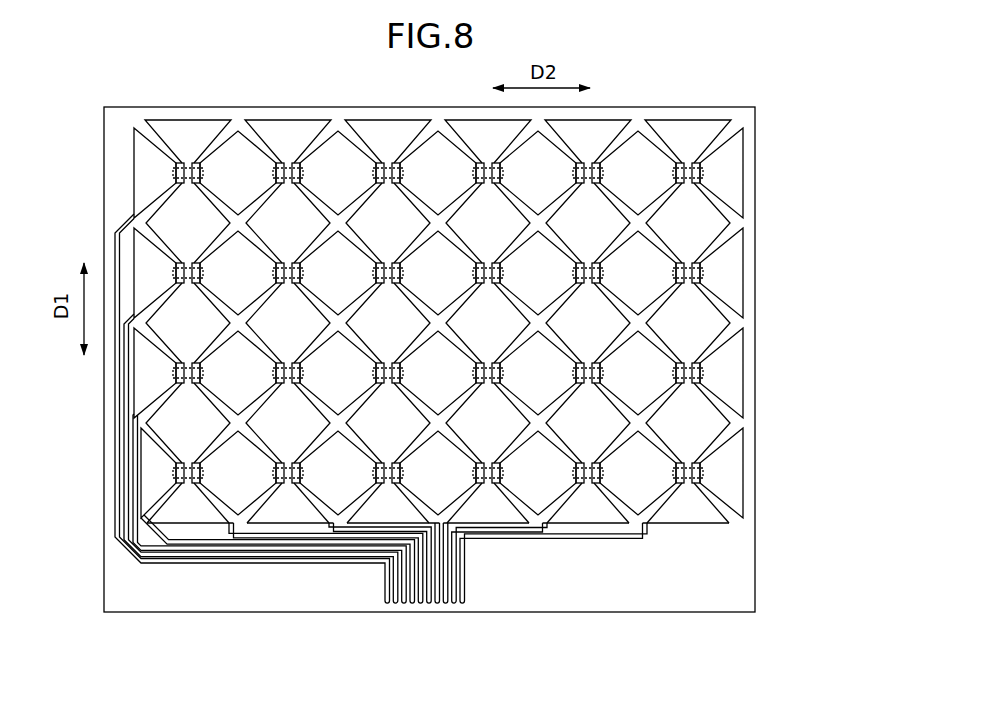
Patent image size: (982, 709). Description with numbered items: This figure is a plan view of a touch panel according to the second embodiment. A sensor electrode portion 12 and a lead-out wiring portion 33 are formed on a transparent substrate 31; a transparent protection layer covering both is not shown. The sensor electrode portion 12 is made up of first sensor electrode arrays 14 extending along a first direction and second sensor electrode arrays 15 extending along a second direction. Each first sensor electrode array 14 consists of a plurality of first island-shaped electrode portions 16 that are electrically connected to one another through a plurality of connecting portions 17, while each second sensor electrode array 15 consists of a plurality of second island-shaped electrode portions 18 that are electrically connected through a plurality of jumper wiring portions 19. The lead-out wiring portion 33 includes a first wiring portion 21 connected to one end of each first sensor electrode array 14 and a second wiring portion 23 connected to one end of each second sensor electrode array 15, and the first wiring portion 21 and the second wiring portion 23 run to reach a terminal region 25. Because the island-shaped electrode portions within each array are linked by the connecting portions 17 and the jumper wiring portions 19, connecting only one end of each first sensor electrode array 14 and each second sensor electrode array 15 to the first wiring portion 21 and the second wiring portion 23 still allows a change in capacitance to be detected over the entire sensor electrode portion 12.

The sensor electrode portion 12 is at (437, 112).
The first sensor electrode array 14 is at (590, 525).
The second sensor electrode array 15 is at (739, 368).
The first island-shaped electrode portion 16 is at (607, 432).
The connecting portion 17 is at (593, 362).
The second island-shaped electrode portion 18 is at (637, 392).
The jumper wiring portion 19 is at (600, 373).
The first wiring portion 21 is at (520, 533).
The second wiring portion 23 is at (128, 455).
The terminal region 25 is at (424, 592).
The transparent substrate 31 is at (163, 106).
The lead-out wiring portion 33 is at (121, 561).